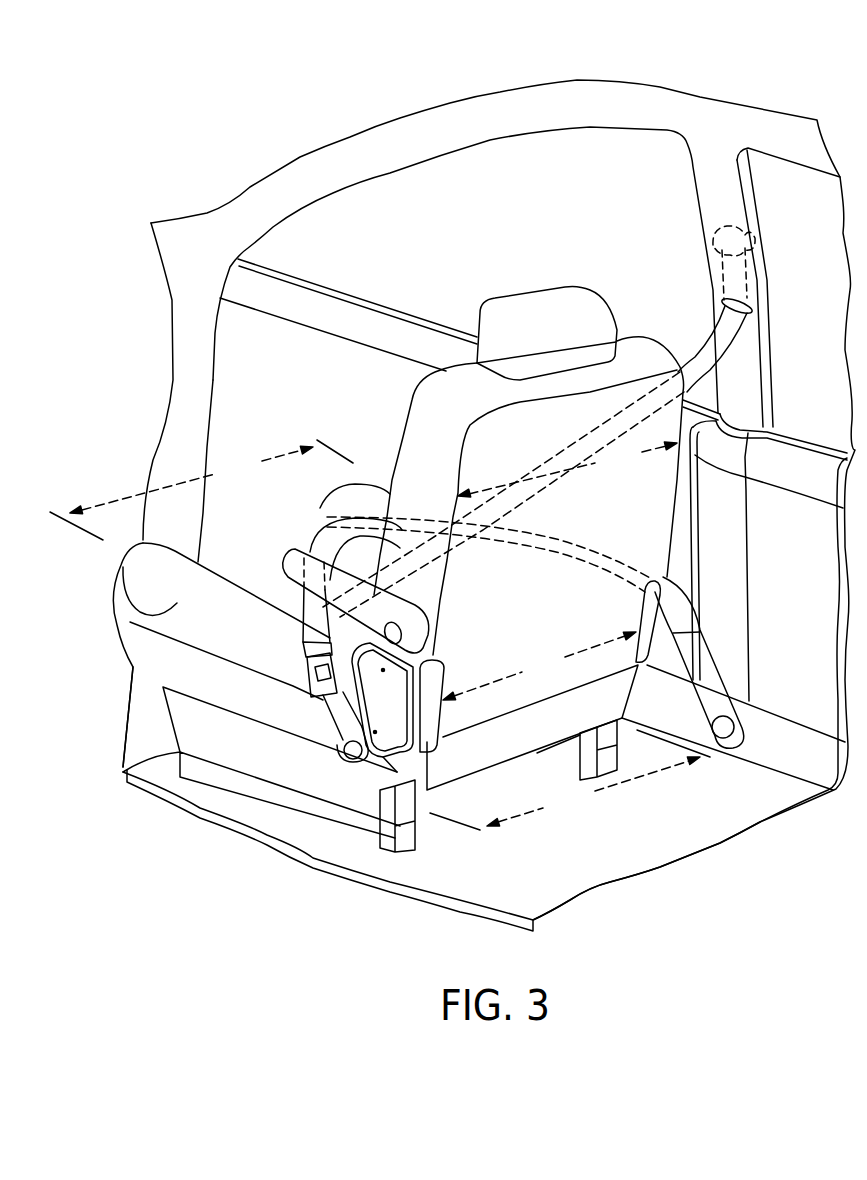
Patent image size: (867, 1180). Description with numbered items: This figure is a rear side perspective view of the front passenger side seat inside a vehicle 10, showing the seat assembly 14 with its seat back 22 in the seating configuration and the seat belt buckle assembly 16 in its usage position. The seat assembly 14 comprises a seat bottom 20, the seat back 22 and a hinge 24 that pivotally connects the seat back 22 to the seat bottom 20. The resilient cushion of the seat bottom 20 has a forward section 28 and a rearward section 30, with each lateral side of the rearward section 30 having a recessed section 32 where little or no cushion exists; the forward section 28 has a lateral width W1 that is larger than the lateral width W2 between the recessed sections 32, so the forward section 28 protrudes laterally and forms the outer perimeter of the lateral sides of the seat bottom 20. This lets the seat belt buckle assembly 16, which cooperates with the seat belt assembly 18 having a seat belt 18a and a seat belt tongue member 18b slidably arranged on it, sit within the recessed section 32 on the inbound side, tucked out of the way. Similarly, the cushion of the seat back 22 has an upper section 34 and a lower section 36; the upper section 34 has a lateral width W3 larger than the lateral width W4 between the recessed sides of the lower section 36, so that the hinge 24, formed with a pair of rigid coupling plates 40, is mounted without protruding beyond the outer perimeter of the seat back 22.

The vehicle 10 is at (740, 72).
The seat assembly 14 is at (535, 286).
The seat belt buckle assembly 16 is at (323, 703).
The seat belt assembly 18 is at (370, 512).
The seat belt 18a is at (318, 504).
The seat belt tongue member 18b is at (307, 650).
The seat bottom 20 is at (100, 574).
The seat back 22 is at (409, 410).
The hinge 24 is at (412, 752).
The forward section 28 is at (124, 626).
The rearward section 30 is at (362, 662).
The recessed section 32 is at (383, 767).
The upper section 34 is at (563, 410).
The lower section 36 is at (583, 667).
The coupling plates 40 is at (425, 712).
The lateral width of the forward section W1 is at (201, 490).
The lateral width between the recessed sections W2 is at (570, 780).
The lateral width of the upper section W3 is at (567, 469).
The lateral width between the recessed sections of the lower section W4 is at (539, 666).